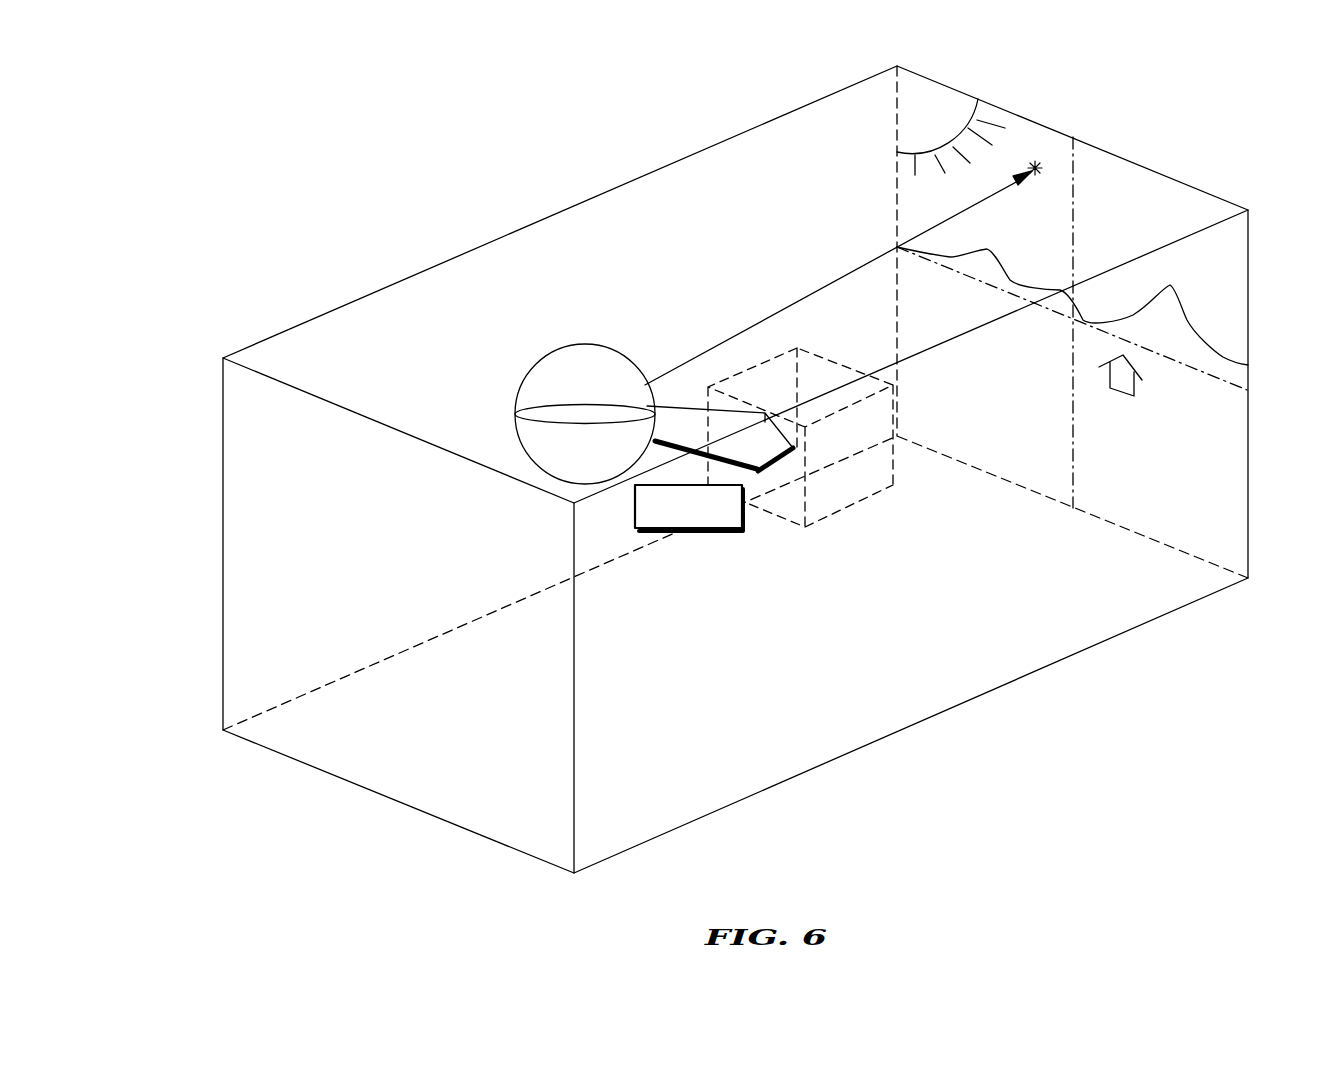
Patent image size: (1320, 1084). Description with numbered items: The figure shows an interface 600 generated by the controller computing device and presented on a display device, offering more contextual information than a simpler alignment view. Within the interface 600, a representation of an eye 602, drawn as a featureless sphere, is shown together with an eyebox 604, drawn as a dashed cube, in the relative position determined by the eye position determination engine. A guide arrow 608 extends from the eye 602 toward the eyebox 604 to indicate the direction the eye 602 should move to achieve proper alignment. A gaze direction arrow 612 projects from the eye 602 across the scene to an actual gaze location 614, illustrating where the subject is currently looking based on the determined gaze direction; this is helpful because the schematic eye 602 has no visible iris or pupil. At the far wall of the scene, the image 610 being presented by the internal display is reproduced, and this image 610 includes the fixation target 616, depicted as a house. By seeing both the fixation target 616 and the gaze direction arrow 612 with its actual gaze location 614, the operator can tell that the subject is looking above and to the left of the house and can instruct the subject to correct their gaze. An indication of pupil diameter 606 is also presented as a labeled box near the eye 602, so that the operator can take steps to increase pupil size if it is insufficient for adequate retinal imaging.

The interface 600 is at (234, 847).
The representation of an eye 602 is at (528, 381).
The eyebox 604 is at (847, 510).
The indication of pupil diameter 606 is at (712, 533).
The guide arrow 608 is at (690, 410).
The image 610 is at (1042, 441).
The gaze direction arrow 612 is at (787, 310).
The actual gaze location 614 is at (1038, 167).
The fixation target 616 is at (1136, 394).